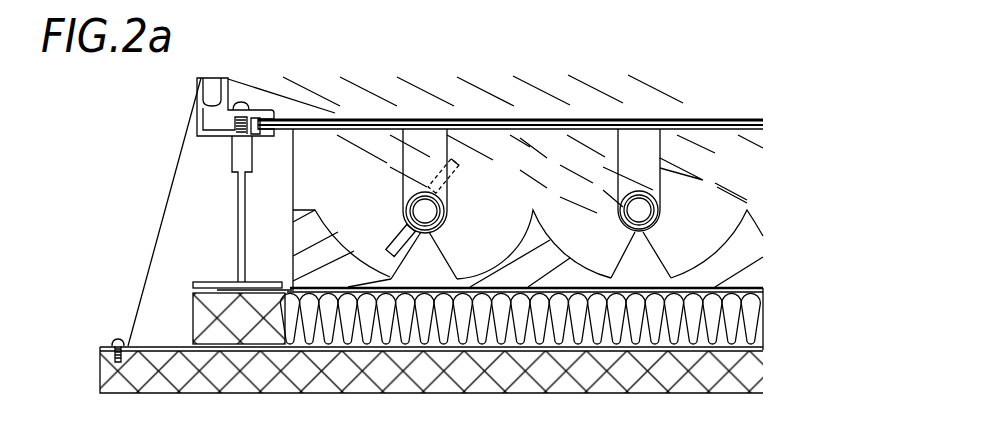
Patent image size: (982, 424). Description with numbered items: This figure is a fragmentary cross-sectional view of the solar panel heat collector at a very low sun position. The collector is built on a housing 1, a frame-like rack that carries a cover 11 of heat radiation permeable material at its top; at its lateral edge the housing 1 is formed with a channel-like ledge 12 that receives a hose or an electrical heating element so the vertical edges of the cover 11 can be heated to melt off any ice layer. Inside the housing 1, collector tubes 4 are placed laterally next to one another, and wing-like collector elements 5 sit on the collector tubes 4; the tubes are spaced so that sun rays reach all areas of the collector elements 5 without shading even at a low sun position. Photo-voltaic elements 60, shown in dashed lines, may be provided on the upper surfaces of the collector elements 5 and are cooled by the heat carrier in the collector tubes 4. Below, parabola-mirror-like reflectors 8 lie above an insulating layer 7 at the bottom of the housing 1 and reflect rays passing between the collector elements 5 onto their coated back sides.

The housing 1 is at (150, 233).
The channel-like ledge 12 is at (197, 108).
The cover 11 is at (727, 127).
The collector element 5 is at (703, 180).
The collector tube 4 is at (748, 227).
The photo-voltaic element 60 is at (402, 236).
The reflector 8 is at (757, 258).
The insulating layer 7 is at (737, 302).